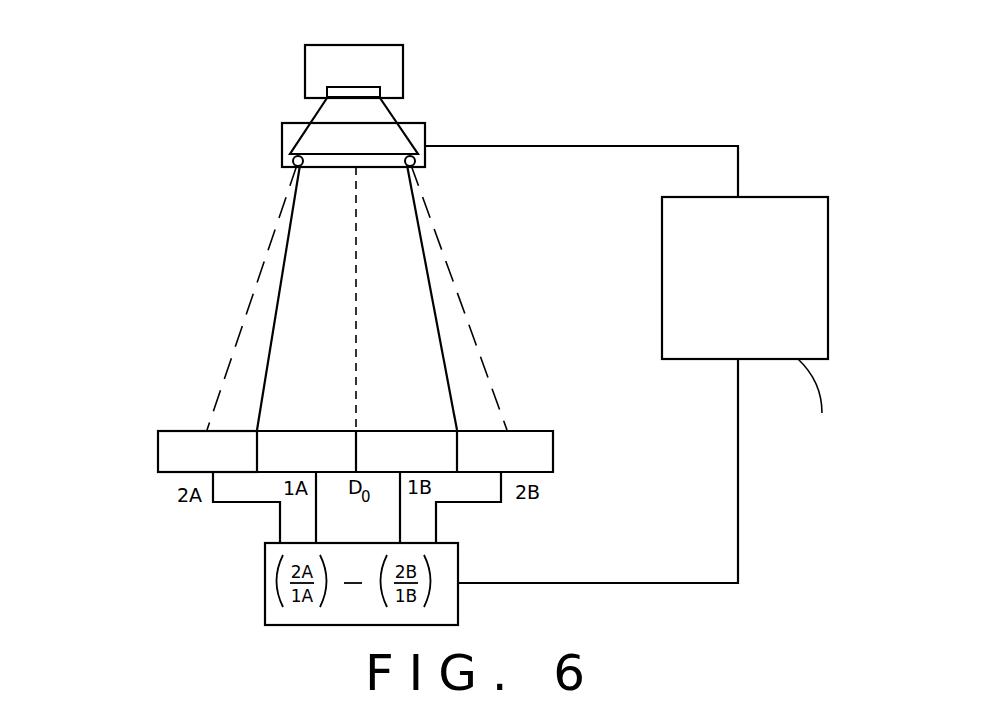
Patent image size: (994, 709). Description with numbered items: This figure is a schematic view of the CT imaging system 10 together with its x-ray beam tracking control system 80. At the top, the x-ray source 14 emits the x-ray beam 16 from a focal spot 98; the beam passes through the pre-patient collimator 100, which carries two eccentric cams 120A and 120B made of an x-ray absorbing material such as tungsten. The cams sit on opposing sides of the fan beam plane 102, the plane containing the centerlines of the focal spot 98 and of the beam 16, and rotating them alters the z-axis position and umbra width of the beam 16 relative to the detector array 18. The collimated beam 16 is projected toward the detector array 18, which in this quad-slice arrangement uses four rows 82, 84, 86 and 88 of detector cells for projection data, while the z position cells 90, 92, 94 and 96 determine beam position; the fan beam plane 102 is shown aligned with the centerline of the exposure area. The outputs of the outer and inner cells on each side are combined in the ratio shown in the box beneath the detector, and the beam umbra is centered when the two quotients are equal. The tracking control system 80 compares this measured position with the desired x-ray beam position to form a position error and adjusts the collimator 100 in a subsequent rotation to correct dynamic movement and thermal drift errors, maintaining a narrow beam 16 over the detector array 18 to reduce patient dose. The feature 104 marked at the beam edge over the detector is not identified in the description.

The CT imaging system 10 is at (134, 204).
The x-ray source 14 is at (403, 57).
The focal spot 98 is at (403, 88).
The pre-patient collimator 100 is at (428, 128).
The eccentric cam 120A is at (297, 168).
The eccentric cam 120B is at (413, 163).
The x-ray beam 16 is at (458, 300).
The fan beam plane 102 is at (357, 341).
The detector array 18 is at (325, 424).
The row of detector cells 82 is at (150, 453).
The detector cell 92 is at (310, 430).
The detector cell 94 is at (390, 430).
The row of detector cells 88 is at (562, 448).
The beam edge position 104 is at (531, 422).
The detector cell 90 is at (168, 473).
The row of detector cells 84 is at (268, 480).
The row of detector cells 86 is at (450, 484).
The detector cell 96 is at (553, 473).
The x-ray beam tracking control system 80 is at (828, 215).